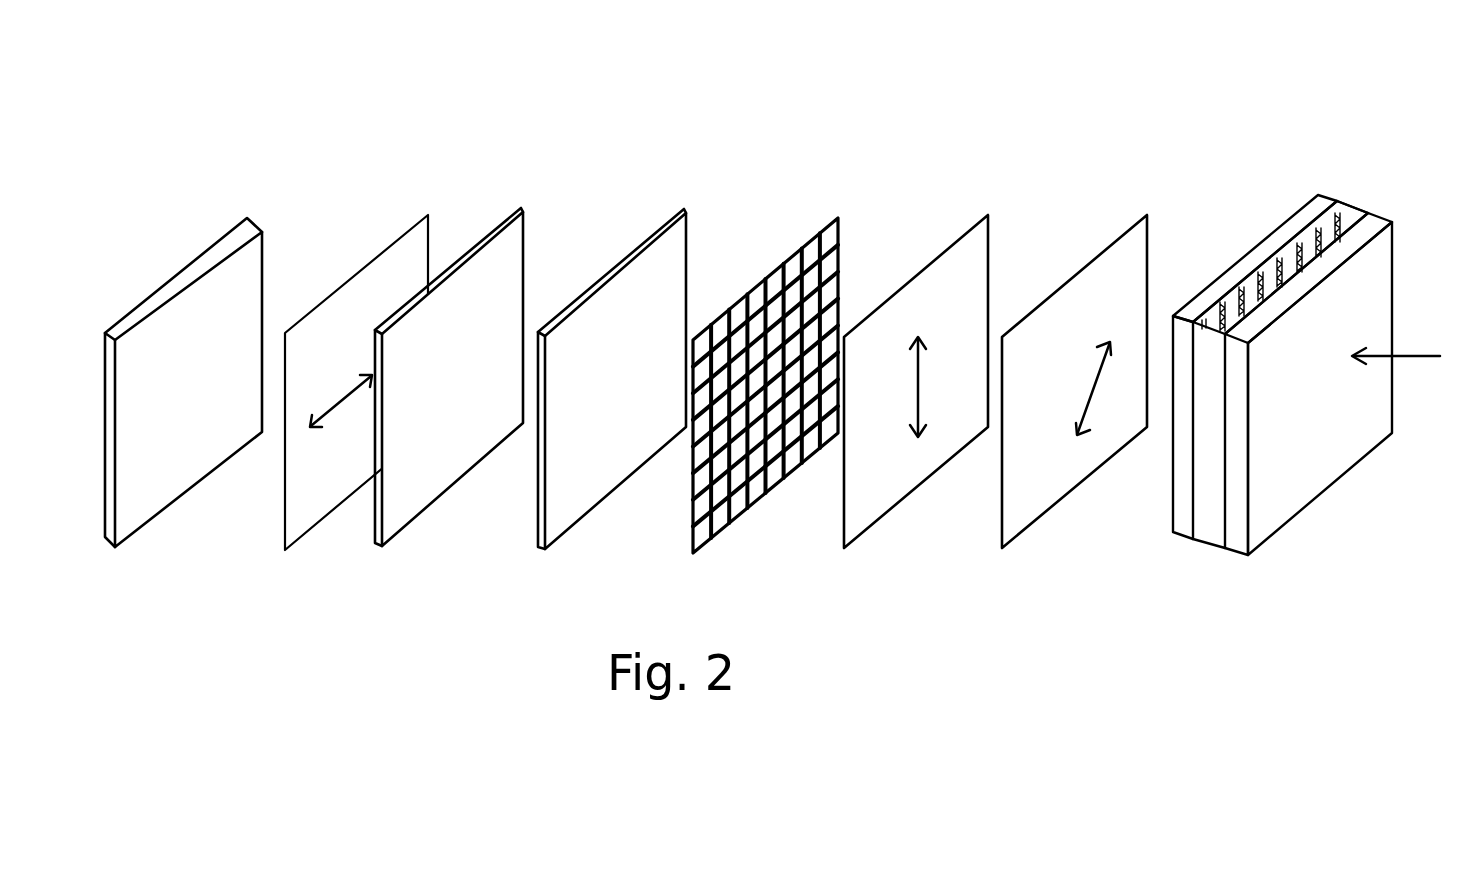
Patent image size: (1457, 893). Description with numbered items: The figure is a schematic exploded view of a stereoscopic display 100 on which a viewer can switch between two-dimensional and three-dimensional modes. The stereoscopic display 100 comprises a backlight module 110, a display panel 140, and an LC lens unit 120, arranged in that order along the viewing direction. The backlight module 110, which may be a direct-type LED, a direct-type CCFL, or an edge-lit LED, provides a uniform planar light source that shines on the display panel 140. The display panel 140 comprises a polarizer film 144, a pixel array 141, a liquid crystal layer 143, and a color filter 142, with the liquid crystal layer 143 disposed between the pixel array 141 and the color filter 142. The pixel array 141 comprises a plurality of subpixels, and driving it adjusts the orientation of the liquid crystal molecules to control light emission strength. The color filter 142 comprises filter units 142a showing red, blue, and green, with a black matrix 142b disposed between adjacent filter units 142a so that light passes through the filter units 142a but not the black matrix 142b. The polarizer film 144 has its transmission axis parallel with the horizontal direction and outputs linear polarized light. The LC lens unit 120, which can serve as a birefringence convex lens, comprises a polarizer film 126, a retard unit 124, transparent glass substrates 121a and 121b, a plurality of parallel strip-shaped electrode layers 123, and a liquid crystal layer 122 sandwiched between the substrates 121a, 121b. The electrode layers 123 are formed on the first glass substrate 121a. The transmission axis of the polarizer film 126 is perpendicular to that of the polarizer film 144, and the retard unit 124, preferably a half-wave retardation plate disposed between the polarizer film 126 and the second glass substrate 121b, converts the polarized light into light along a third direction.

The stereoscopic display 100 is at (707, 89).
The backlight module 110 is at (200, 254).
The LC lens unit 120 is at (925, 165).
The first glass substrate 121a is at (1202, 302).
The second glass substrate 121b is at (1367, 235).
The liquid crystal layer 122 is at (1343, 225).
The strip-shaped electrode layers 123 is at (1275, 268).
The retard unit 124 is at (1101, 260).
The polarizer film 126 is at (943, 252).
The display panel 140 is at (293, 565).
The pixel array 141 is at (488, 234).
The color filter 142 is at (813, 239).
The filter unit 142a is at (787, 272).
The black matrix 142b is at (747, 298).
The liquid crystal layer 143 is at (648, 238).
The polarizer film 144 is at (382, 252).